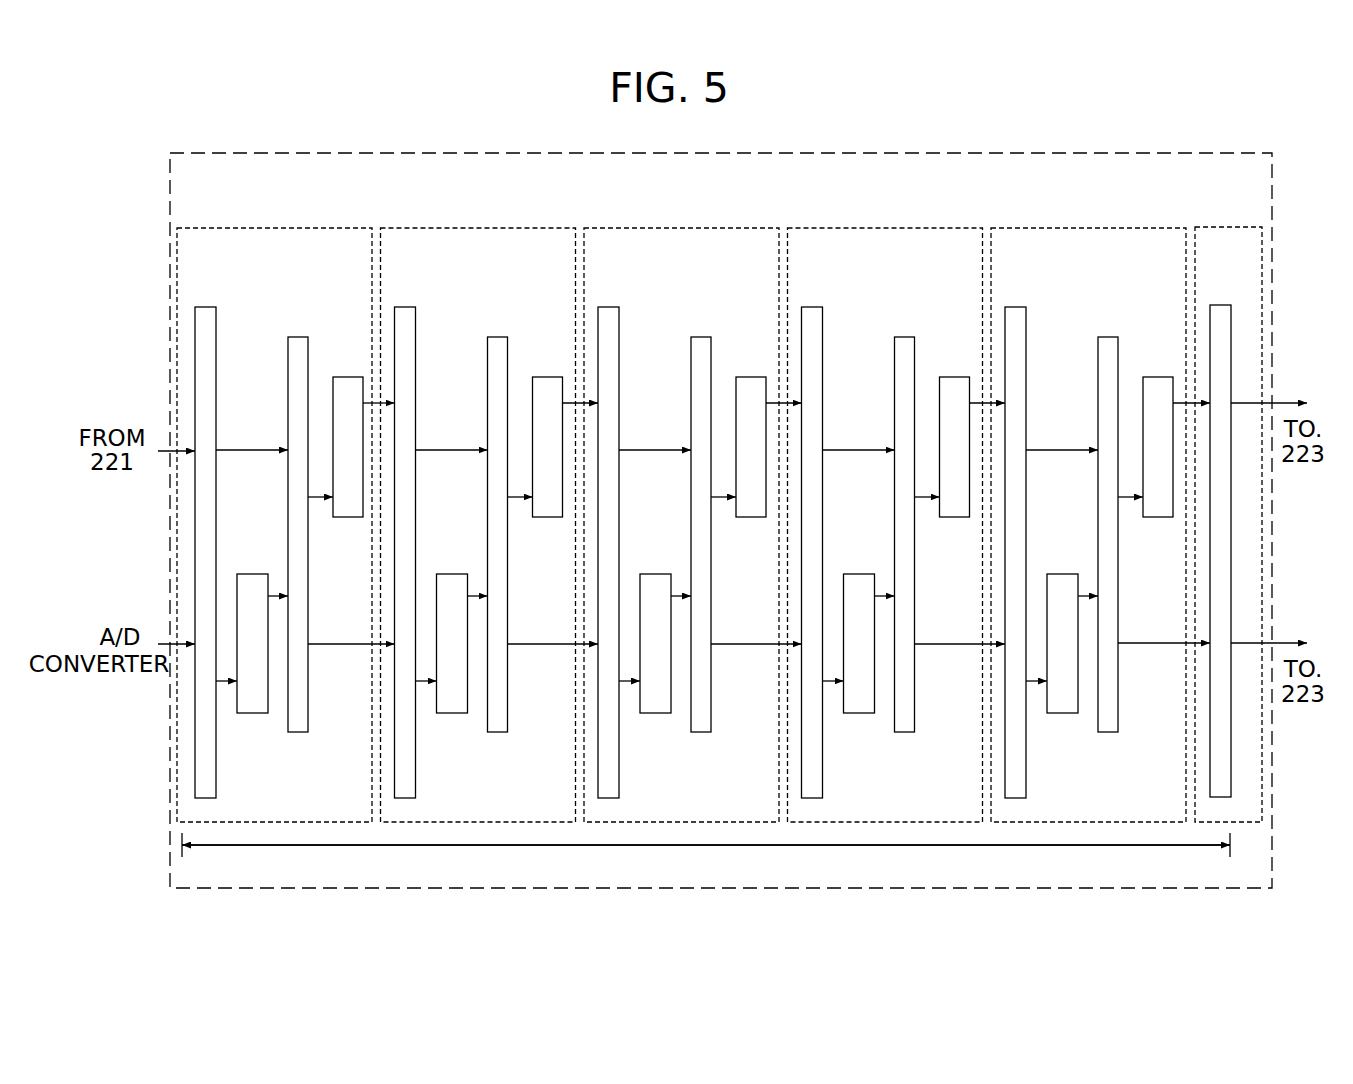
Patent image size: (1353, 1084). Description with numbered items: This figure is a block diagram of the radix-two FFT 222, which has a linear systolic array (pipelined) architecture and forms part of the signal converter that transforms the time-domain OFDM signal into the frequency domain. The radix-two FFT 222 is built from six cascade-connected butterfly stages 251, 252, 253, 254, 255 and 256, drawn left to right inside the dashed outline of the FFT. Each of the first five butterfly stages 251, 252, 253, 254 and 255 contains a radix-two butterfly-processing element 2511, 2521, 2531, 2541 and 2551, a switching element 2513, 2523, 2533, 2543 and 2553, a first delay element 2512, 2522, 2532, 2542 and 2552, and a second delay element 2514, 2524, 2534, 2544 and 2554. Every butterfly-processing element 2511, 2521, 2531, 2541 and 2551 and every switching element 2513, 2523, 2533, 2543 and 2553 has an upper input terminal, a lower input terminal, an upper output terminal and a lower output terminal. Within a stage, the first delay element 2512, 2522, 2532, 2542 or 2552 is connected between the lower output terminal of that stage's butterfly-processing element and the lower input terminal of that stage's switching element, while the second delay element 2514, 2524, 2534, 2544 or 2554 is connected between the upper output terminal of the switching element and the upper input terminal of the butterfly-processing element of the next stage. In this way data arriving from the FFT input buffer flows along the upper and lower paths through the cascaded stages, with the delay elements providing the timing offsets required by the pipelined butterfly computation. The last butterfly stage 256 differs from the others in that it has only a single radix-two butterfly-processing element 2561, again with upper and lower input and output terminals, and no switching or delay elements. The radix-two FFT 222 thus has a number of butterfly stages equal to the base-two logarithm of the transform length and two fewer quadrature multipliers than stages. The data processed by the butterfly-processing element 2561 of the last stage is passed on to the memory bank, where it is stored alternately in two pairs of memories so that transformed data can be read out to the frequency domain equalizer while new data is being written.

The radix-2 FFT 222 is at (592, 139).
The butterfly stage 251 is at (270, 228).
The butterfly stage 252 is at (462, 228).
The butterfly stage 253 is at (686, 228).
The butterfly stage 254 is at (886, 228).
The butterfly stage 255 is at (1090, 228).
The last butterfly stage 256 is at (1228, 227).
The radix-2 butterfly-processing element 2511 is at (207, 307).
The first delay element 2512 is at (252, 713).
The switching element 2513 is at (297, 337).
The second delay element 2514 is at (351, 377).
The radix-2 butterfly-processing element 2521 is at (406, 307).
The first delay element 2522 is at (452, 713).
The switching element 2523 is at (496, 337).
The second delay element 2524 is at (550, 377).
The radix-2 butterfly-processing element 2531 is at (610, 307).
The first delay element 2532 is at (655, 713).
The switching element 2533 is at (700, 337).
The second delay element 2534 is at (754, 377).
The radix-2 butterfly-processing element 2541 is at (814, 307).
The first delay element 2542 is at (858, 713).
The switching element 2543 is at (904, 337).
The second delay element 2544 is at (958, 377).
The radix-2 butterfly-processing element 2551 is at (1017, 307).
The first delay element 2552 is at (1062, 713).
The switching element 2553 is at (1107, 337).
The second delay element 2554 is at (1161, 377).
The radix-2 butterfly-processing element 2561 is at (1222, 305).